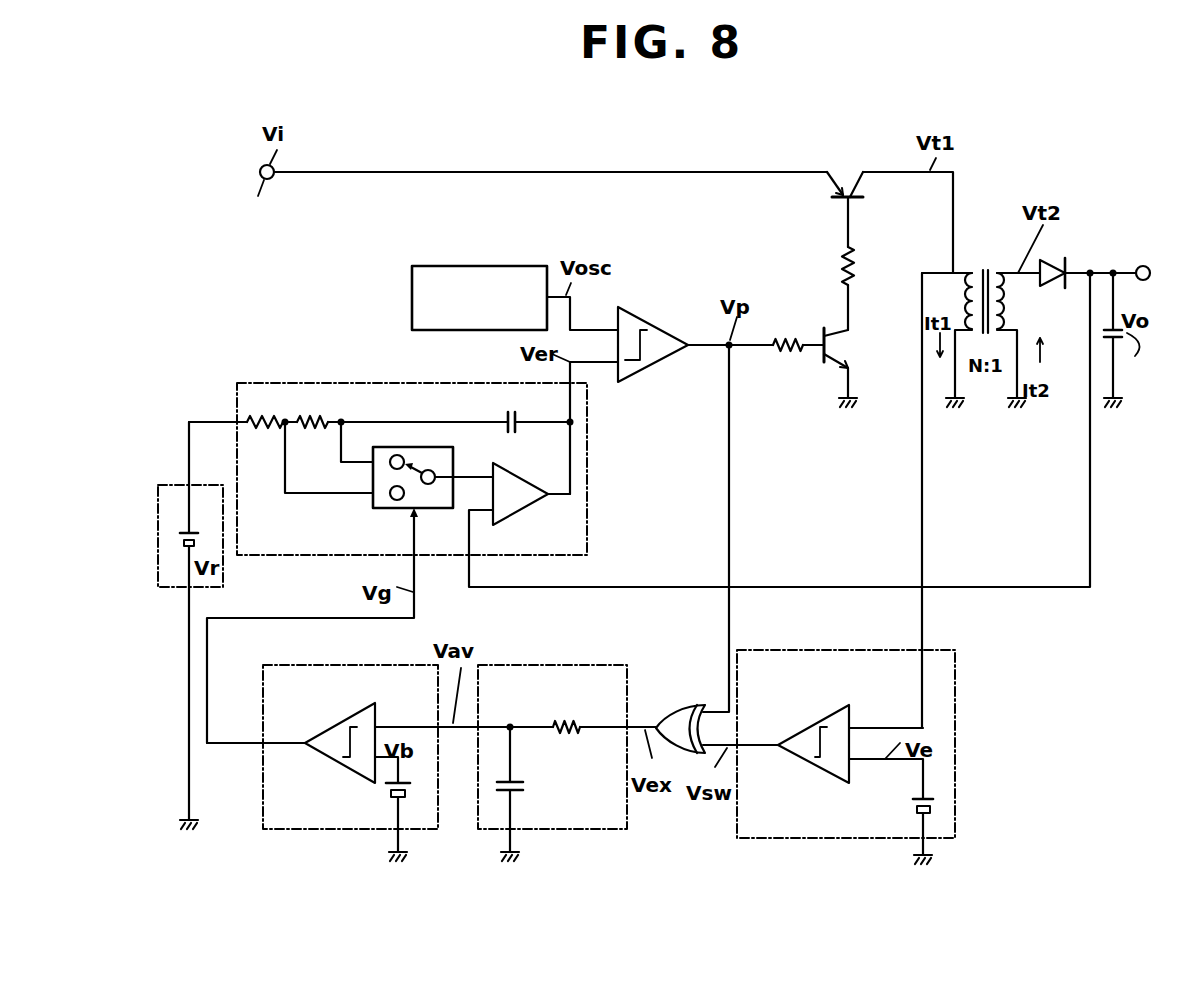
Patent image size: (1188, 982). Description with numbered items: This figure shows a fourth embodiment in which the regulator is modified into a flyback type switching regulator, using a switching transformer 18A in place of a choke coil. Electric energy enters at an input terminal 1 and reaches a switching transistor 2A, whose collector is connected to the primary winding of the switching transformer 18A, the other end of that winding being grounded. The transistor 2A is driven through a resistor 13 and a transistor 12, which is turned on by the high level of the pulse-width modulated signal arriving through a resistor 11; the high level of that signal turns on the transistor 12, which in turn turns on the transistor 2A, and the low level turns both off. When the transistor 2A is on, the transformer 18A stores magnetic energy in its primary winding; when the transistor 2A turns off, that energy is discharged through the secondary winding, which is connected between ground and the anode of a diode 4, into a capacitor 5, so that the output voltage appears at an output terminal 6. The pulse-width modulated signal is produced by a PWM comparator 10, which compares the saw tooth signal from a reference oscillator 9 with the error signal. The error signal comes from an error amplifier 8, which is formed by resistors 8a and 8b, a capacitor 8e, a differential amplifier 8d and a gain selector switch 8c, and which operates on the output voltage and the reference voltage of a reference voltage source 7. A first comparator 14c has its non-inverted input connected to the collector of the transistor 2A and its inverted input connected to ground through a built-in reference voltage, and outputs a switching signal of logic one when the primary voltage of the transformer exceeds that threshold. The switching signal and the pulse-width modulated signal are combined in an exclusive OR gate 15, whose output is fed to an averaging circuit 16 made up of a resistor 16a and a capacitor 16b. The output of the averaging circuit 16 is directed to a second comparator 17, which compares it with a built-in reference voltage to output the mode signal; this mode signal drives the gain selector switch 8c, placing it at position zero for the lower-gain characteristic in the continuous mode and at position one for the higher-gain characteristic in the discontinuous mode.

The input terminal 1 is at (263, 196).
The switching transistor 2A is at (850, 178).
The diode 4 is at (1053, 260).
The capacitor 5 is at (1124, 357).
The output terminal 6 is at (1135, 298).
The reference voltage source 7 is at (208, 478).
The error amplifier 8 is at (235, 392).
The resistor 8a is at (271, 387).
The resistor 8b is at (317, 387).
The gain selector switch 8c is at (435, 448).
The differential amplifier 8d is at (532, 480).
The capacitor 8e is at (503, 400).
The reference oscillator 9 is at (503, 265).
The PWM comparator 10 is at (663, 330).
The base resistor 11 is at (787, 355).
The transistor 12 is at (850, 338).
The resistor 13 is at (838, 237).
The first comparator 14c is at (960, 773).
The exclusive OR gate 15 is at (692, 703).
The averaging circuit 16 is at (541, 665).
The averaging resistor 16a is at (567, 737).
The averaging capacitor 16b is at (522, 787).
The second comparator 17 is at (260, 777).
The switching transformer 18A is at (985, 267).